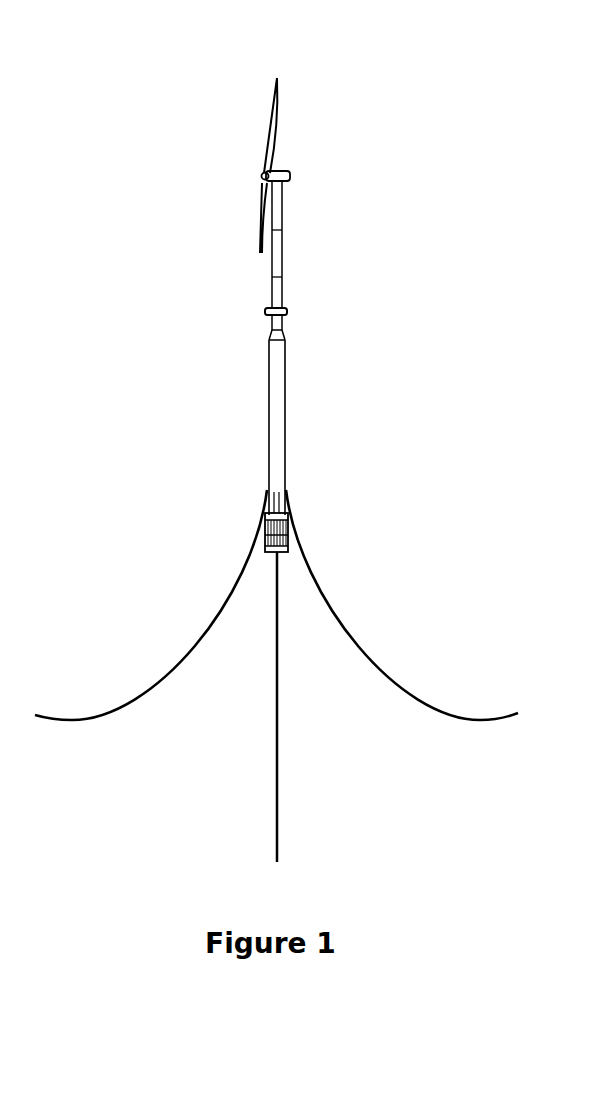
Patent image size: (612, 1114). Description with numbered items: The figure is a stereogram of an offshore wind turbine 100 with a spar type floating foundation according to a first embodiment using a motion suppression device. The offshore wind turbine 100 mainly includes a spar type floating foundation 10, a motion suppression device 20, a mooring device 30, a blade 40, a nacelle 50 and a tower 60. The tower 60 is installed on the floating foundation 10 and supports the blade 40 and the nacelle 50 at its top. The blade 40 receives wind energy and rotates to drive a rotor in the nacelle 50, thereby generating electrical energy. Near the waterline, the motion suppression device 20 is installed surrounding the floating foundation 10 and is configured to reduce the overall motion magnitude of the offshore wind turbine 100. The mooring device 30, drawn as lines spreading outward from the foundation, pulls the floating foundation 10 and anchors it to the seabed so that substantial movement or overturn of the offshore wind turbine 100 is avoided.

The offshore wind turbine 100 is at (155, 37).
The blade 40 is at (272, 135).
The nacelle 50 is at (290, 176).
The tower 60 is at (282, 267).
The spar type floating foundation 10 is at (284, 395).
The motion suppression device 20 is at (292, 518).
The mooring device 30 is at (377, 668).